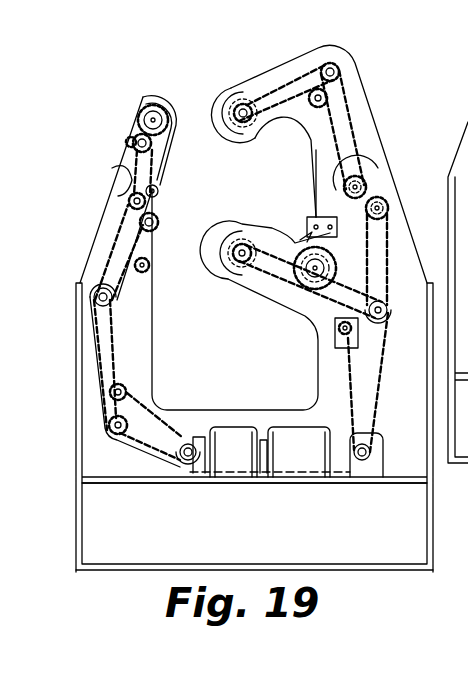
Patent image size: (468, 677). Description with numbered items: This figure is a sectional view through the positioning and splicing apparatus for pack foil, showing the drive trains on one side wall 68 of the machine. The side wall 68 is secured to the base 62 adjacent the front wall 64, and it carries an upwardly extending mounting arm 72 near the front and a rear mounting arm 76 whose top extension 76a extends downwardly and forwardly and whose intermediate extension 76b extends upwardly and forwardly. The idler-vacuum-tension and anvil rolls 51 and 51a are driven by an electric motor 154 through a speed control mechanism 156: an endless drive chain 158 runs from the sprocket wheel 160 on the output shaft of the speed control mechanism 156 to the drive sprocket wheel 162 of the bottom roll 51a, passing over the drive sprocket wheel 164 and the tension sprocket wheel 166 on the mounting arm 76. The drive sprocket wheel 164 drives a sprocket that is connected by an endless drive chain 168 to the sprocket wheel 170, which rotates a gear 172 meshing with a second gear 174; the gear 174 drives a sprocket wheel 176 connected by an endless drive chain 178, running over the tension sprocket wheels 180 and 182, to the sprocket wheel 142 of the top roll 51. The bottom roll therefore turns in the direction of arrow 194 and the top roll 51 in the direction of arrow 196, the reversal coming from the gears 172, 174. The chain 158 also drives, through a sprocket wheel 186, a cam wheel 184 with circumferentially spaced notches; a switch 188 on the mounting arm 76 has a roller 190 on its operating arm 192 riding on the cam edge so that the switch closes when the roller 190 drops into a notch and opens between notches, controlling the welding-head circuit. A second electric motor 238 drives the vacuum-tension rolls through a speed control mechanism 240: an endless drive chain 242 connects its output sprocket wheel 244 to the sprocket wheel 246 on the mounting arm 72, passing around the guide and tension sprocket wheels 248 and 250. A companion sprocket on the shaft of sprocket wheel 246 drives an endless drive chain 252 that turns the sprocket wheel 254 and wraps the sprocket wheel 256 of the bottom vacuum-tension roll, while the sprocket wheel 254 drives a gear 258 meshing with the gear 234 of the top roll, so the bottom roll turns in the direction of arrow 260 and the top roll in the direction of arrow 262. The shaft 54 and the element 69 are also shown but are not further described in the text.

The top idler-vacuum-tension and anvil roll 51 is at (225, 118).
The bottom idler-vacuum-tension and anvil roll 51a is at (222, 258).
The drive shaft 54 is at (370, 148).
The base 62 is at (405, 572).
The front wall 64 is at (76, 372).
The side wall 68 is at (197, 410).
The bracket 69 is at (112, 165).
The mounting arm 72 is at (95, 250).
The rear mounting arm 76 is at (355, 85).
The top extension 76a is at (268, 87).
The intermediate extension 76b is at (256, 228).
The sprocket wheel 142 is at (235, 125).
The electric motor 154 is at (302, 470).
The speed control mechanism 156 is at (254, 501).
The endless drive chain 158 is at (381, 380).
The sprocket wheel 160 is at (375, 452).
The drive sprocket wheel 162 is at (240, 264).
The drive sprocket wheel 164 is at (386, 305).
The tension sprocket wheel 166 is at (345, 328).
The endless drive chain 168 is at (389, 268).
The sprocket wheel 170 is at (390, 203).
The gear 172 is at (385, 195).
The second gear 174 is at (375, 173).
The sprocket wheel 176 is at (340, 183).
The endless drive chain 178 is at (360, 110).
The tension sprocket wheel 180 is at (332, 62).
The tension sprocket wheel 182 is at (312, 89).
The cam wheel 184 is at (297, 262).
The sprocket wheel 186 is at (322, 277).
The switch 188 is at (318, 225).
The roller 190 is at (294, 235).
The operating arm 192 is at (331, 228).
The arrow 194 is at (226, 222).
The arrow 196 is at (228, 88).
The gear 234 is at (153, 105).
The electric motor 238 is at (232, 470).
The speed control mechanism 240 is at (190, 462).
The endless drive chain 242 is at (114, 333).
The sprocket wheel 244 is at (177, 458).
The sprocket wheel 246 is at (92, 297).
The guide and tension sprocket wheel 248 is at (124, 388).
The guide and tension sprocket wheel 250 is at (116, 435).
The endless drive chain 252 is at (128, 233).
The sprocket wheel 254 is at (126, 138).
The sprocket wheel 256 is at (160, 200).
The gear 258 is at (134, 137).
The arrow 260 is at (178, 229).
The arrow 262 is at (203, 82).